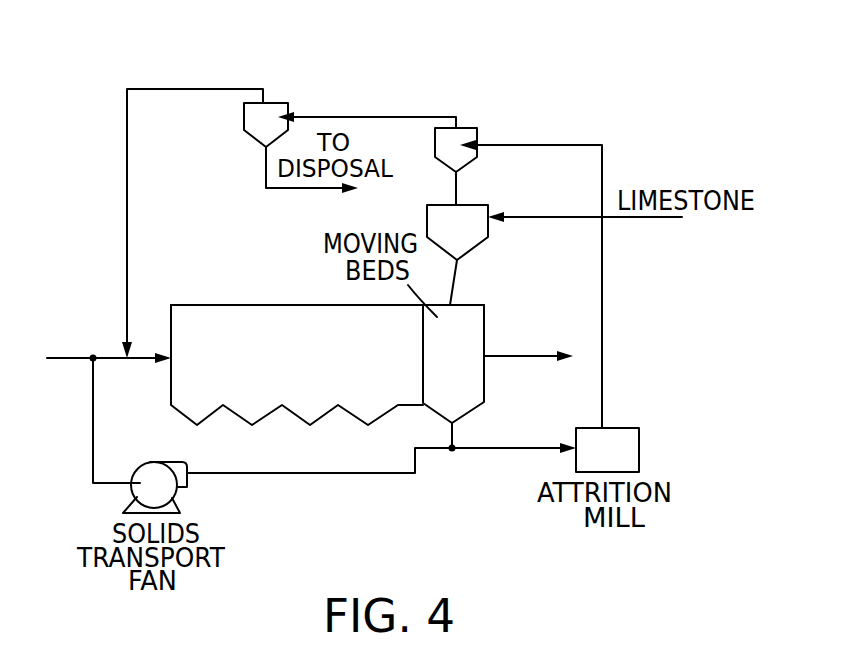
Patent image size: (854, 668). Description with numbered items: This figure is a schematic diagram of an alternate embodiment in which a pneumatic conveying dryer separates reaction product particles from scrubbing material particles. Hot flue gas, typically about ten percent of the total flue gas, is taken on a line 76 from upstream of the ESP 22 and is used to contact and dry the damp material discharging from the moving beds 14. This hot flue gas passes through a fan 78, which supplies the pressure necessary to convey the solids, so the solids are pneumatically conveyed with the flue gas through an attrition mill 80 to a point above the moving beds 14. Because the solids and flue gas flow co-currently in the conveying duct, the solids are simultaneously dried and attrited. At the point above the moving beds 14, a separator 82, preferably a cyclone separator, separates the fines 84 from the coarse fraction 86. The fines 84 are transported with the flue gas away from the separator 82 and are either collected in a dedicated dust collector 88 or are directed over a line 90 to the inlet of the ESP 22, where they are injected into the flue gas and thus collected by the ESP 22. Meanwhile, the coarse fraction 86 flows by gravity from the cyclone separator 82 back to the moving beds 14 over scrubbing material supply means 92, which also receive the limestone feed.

The moving beds 14 is at (485, 305).
The ESP 22 is at (313, 314).
The line 76 is at (298, 471).
The fan 78 is at (157, 467).
The attrition mill 80 is at (627, 428).
The separator 82 is at (470, 130).
The fines 84 is at (404, 105).
The coarse fraction 86 is at (457, 190).
The dedicated dust collector 88 is at (283, 104).
The line 90 is at (127, 222).
The scrubbing material supply means 92 is at (478, 240).